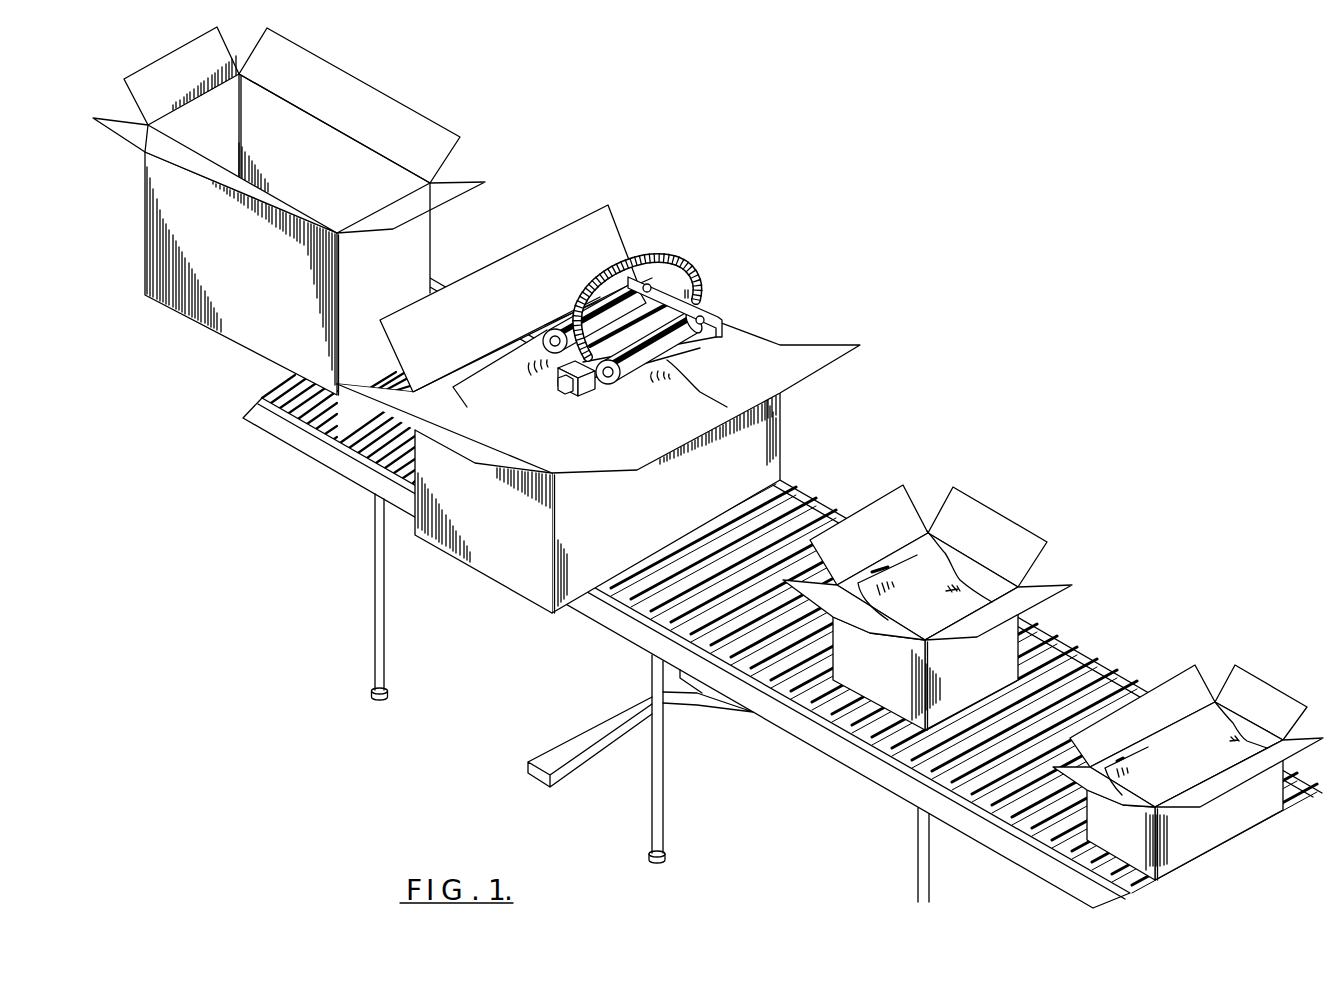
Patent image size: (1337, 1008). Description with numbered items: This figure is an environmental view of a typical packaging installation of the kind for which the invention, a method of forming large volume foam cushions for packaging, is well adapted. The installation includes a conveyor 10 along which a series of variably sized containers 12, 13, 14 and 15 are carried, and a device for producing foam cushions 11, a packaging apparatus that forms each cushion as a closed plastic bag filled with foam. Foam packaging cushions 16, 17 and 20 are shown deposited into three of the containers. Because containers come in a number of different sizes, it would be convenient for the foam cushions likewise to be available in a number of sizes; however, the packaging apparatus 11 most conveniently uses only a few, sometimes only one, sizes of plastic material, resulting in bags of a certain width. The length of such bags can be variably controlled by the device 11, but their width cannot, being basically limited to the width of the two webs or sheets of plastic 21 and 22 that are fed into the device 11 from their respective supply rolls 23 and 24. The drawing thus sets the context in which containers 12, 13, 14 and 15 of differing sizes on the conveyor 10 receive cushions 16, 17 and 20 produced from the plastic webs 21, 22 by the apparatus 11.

The conveyor 10 is at (807, 788).
The device for producing foam cushions 11 is at (712, 259).
The container 12 is at (289, 211).
The container 13 is at (507, 540).
The container 14 is at (884, 675).
The container 15 is at (1129, 837).
The foam packaging cushion 16 is at (565, 446).
The foam packaging cushion 17 is at (932, 612).
The foam packaging cushion 20 is at (1197, 763).
The web or sheet of plastic 21 is at (575, 357).
The web or sheet of plastic 22 is at (595, 372).
The supply roll 23 is at (637, 285).
The supply roll 24 is at (740, 325).